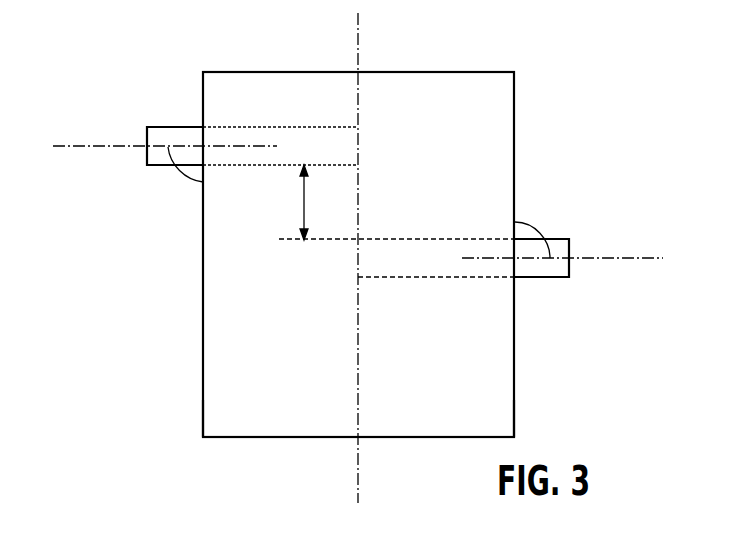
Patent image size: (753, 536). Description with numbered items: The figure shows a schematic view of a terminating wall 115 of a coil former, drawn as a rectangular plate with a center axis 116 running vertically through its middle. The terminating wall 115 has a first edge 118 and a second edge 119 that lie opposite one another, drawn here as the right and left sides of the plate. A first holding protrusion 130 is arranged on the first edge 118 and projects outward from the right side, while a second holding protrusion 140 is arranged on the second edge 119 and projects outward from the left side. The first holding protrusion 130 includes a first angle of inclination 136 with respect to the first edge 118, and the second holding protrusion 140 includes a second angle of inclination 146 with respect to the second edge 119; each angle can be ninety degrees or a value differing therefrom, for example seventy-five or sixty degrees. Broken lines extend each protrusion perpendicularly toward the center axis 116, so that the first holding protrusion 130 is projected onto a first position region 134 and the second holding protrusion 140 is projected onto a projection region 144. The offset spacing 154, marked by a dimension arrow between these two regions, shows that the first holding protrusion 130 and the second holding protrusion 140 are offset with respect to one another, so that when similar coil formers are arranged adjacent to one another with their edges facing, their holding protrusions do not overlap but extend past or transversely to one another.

The terminating wall 115 is at (514, 105).
The center axis 116 is at (358, 40).
The first edge 118 is at (514, 410).
The second edge 119 is at (203, 409).
The first holding protrusion 130 is at (540, 278).
The first position region 134 is at (348, 263).
The first angle of inclination 136 is at (534, 226).
The second holding protrusion 140 is at (161, 127).
The projection region 144 is at (366, 151).
The second angle of inclination 146 is at (180, 172).
The offset spacing 154 is at (302, 207).